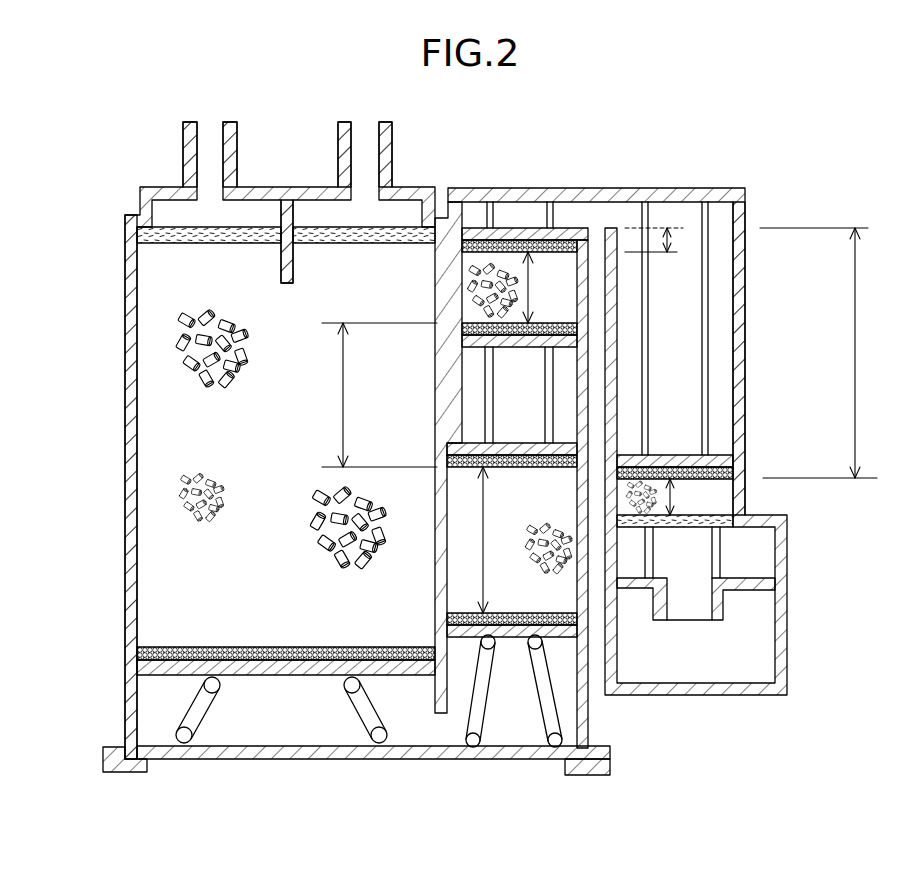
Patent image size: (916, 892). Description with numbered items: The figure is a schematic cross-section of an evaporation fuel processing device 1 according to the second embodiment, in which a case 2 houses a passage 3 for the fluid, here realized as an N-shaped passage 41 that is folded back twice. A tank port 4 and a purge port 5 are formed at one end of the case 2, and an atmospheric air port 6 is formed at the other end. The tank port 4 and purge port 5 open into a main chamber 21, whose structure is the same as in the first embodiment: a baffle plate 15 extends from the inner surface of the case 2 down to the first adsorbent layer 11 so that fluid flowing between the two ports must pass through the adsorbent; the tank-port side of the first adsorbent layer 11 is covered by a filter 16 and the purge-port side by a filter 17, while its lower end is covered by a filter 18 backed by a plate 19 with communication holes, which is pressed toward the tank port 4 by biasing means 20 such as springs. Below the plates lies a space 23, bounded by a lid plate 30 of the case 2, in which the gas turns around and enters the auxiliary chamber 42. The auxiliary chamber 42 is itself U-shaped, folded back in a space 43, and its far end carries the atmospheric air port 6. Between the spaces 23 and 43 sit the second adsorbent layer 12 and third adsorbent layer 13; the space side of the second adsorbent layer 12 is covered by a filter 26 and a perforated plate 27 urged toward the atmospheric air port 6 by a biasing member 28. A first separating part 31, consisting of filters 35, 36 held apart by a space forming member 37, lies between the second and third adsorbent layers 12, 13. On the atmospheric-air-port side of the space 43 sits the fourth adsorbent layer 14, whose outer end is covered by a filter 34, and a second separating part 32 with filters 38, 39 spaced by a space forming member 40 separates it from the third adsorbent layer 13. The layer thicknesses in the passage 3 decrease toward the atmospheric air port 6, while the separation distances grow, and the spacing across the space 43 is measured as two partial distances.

The evaporation fuel processing device 1 is at (118, 205).
The case 2 is at (125, 507).
The passage 3 is at (156, 452).
The tank port 4 is at (203, 158).
The purge port 5 is at (353, 150).
The atmospheric air port 6 is at (693, 598).
The first adsorbent layer 11 is at (195, 310).
The second adsorbent layer 12 is at (463, 500).
The third adsorbent layer 13 is at (563, 258).
The fourth adsorbent layer 14 is at (705, 493).
The baffle plate 15 is at (290, 270).
The filter 16 is at (213, 235).
The filter 17 is at (365, 223).
The filter 18 is at (233, 648).
The plate 19 is at (282, 648).
The biasing means 20 is at (183, 740).
The main chamber 21 is at (155, 631).
The space 23 is at (307, 728).
The filter 26 is at (450, 615).
The plate 27 is at (449, 628).
The biasing member 28 is at (548, 730).
The lid plate 30 is at (432, 752).
The first separating part 31 is at (477, 407).
The second separating part 32 is at (660, 222).
The filter 34 is at (722, 525).
The filter 35 is at (448, 460).
The filter 36 is at (465, 332).
The space forming member 37 is at (487, 368).
The filter 38 is at (505, 238).
The filter 39 is at (737, 458).
The space forming member 40 is at (550, 215).
The passage 41 is at (687, 381).
The auxiliary chamber 42 is at (720, 270).
The space 43 is at (477, 218).